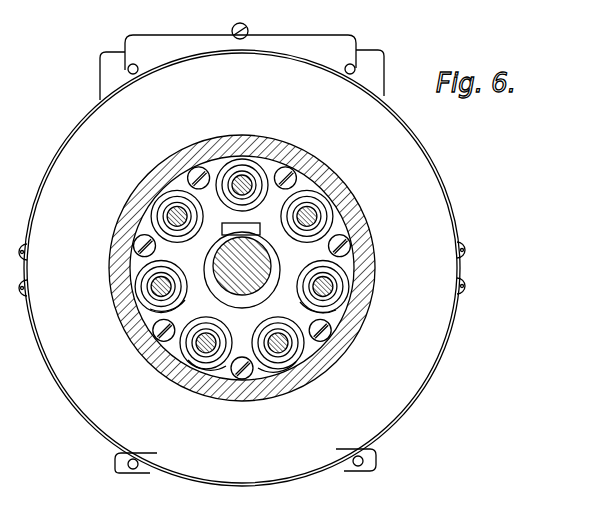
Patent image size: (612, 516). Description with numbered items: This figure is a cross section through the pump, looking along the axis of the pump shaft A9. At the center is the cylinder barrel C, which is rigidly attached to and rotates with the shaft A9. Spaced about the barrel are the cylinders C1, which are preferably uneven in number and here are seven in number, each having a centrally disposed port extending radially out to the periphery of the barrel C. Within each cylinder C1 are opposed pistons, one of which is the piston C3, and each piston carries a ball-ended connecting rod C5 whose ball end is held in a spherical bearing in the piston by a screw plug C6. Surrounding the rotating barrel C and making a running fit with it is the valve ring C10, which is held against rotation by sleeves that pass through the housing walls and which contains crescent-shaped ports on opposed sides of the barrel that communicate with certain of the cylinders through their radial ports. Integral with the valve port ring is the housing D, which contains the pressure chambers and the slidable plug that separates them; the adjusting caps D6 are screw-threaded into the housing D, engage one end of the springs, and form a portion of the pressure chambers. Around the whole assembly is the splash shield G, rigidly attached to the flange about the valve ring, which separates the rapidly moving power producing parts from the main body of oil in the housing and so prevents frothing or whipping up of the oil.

The housing D is at (308, 34).
The adjusting caps D6 is at (110, 56).
The splash shield G is at (430, 151).
The valve ring C10 is at (242, 268).
The cylinders C1 is at (332, 166).
The pump shaft A9 is at (258, 256).
The cylinder barrel C is at (242, 269).
The connecting rods C5 is at (161, 289).
The screw plugs C6 is at (277, 350).
The piston C3 is at (290, 350).